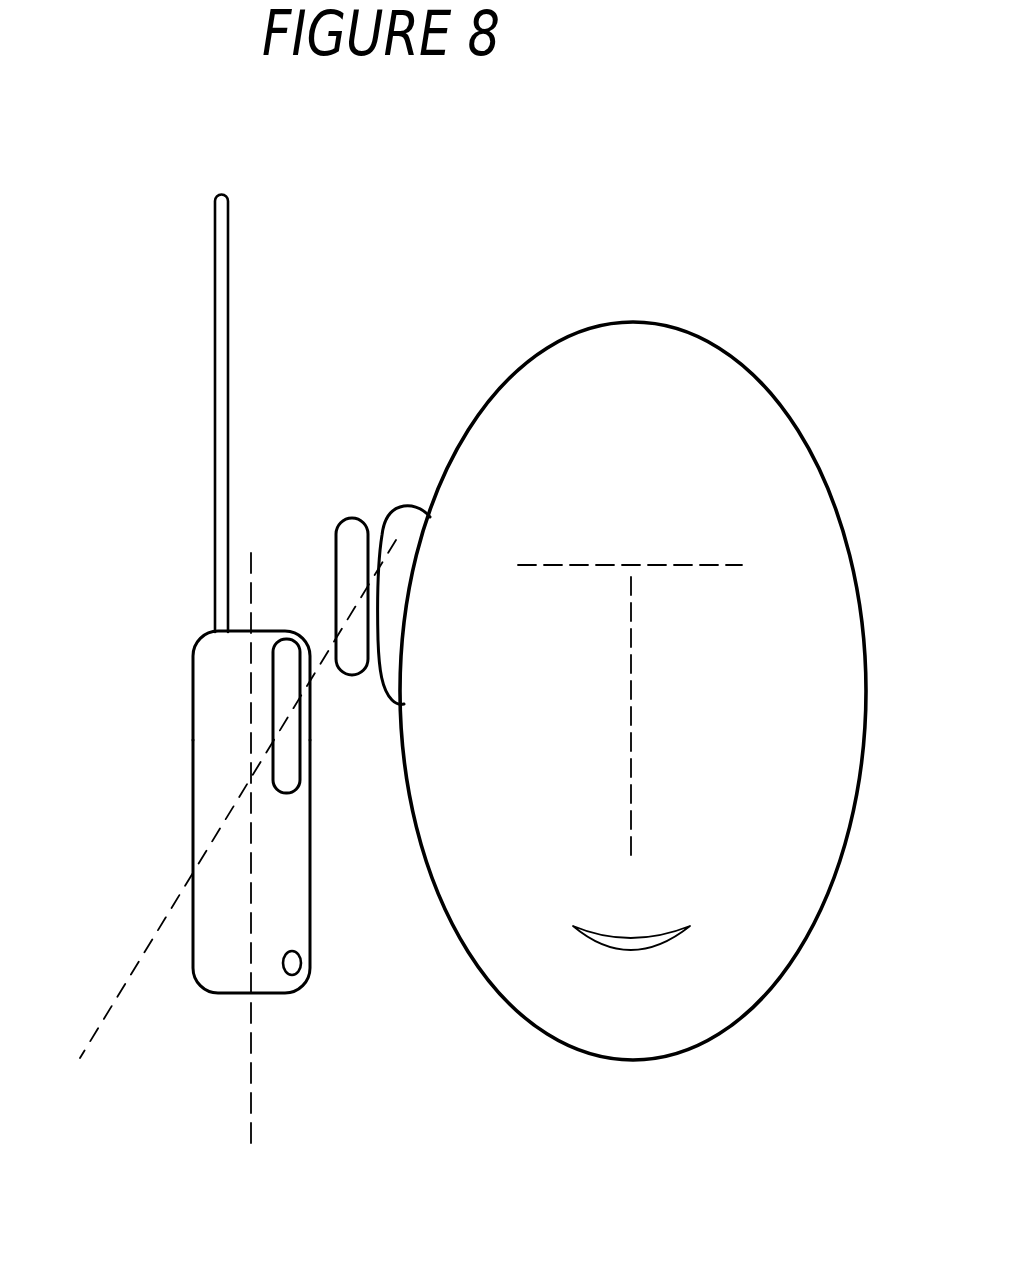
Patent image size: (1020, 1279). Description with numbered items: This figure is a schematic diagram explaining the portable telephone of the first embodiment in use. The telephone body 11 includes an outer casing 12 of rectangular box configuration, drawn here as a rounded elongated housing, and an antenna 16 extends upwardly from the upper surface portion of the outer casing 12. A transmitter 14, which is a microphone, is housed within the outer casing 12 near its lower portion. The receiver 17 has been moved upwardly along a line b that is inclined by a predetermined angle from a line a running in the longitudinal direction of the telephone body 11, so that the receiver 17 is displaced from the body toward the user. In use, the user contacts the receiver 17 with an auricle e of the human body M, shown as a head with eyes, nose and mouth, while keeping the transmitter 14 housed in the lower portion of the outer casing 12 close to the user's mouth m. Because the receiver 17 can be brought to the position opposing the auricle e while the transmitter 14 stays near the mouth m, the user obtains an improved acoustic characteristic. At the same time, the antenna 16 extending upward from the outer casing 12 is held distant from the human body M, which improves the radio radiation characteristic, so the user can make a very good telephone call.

The telephone body 11 is at (193, 690).
The outer casing 12 is at (198, 806).
The transmitter (microphone) 14 is at (301, 963).
The antenna 16 is at (227, 382).
The receiver 17 is at (289, 639).
The line of the longitudinal direction a is at (250, 1012).
The inclined line b is at (313, 650).
The auricle e is at (407, 512).
The human body M is at (790, 415).
The mouth m is at (662, 938).